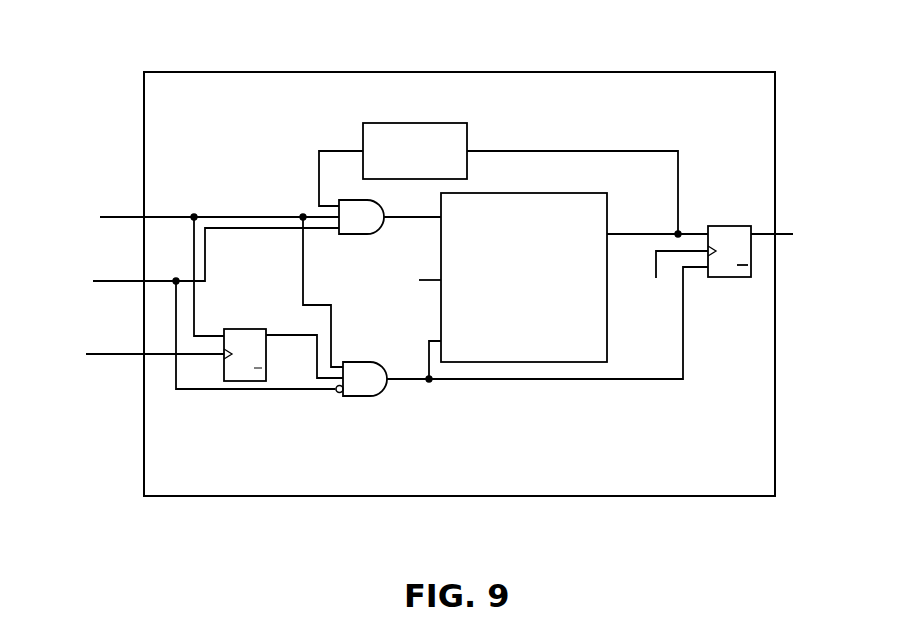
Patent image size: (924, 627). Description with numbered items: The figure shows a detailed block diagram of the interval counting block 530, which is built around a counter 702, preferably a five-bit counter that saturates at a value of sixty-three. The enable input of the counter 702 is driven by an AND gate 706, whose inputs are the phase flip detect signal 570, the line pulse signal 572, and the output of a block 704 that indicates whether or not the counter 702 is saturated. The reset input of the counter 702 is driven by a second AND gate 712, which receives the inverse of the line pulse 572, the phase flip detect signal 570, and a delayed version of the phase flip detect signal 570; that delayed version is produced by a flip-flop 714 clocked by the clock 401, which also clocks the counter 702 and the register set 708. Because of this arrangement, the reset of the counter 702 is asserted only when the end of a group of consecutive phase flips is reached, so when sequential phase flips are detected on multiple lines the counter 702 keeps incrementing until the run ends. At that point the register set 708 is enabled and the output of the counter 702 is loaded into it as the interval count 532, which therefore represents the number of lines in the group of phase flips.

The interval counting block 530 is at (459, 284).
The phase flip detect signal 570 is at (185, 271).
The line pulse signal 572 is at (186, 308).
The clock 401 is at (365, 316).
The block 704 is at (423, 133).
The AND gate 706 is at (358, 222).
The counter 702 is at (568, 286).
The register set 708 is at (726, 233).
The interval count 532 is at (811, 236).
The flip-flop 714 is at (245, 368).
The AND gate 712 is at (362, 383).